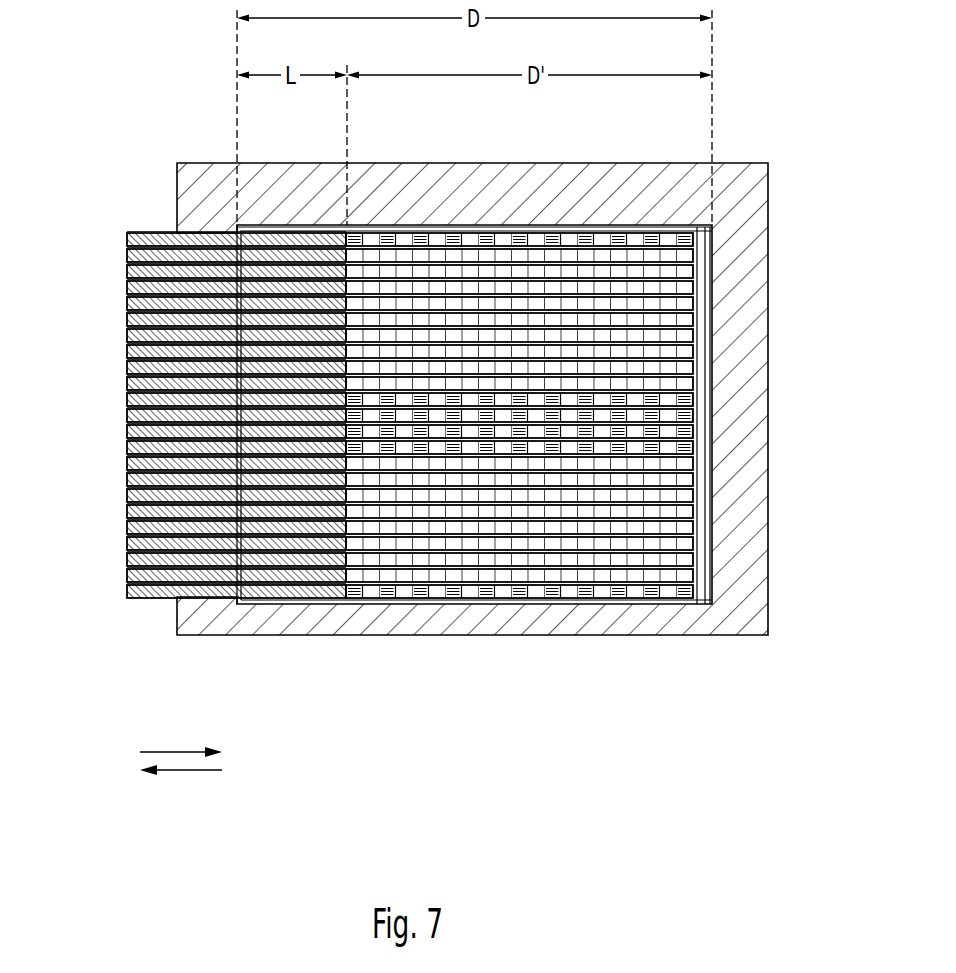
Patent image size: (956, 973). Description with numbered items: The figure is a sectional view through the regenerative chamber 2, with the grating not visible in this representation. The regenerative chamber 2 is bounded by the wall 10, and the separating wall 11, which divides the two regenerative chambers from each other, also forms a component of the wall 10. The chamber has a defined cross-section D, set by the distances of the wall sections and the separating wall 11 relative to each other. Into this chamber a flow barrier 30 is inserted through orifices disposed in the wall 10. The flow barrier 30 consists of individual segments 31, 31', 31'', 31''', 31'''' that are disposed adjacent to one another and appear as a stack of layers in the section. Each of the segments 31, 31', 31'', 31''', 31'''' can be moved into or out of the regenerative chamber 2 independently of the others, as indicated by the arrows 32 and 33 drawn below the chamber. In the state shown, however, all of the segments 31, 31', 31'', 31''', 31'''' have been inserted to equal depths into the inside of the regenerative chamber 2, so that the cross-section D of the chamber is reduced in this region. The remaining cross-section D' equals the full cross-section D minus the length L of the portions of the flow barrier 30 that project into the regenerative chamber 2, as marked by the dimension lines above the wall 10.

The regenerative chamber 2 is at (176, 96).
The wall 10 is at (780, 247).
The separating wall 11 is at (531, 636).
The flow barrier 30 is at (365, 415).
The segment 31 is at (383, 429).
The segment 31' is at (370, 457).
The segment 31'' is at (385, 475).
The segment 31''' is at (369, 411).
The segment 31'''' is at (385, 385).
The arrow 32 is at (176, 750).
The arrow 33 is at (192, 773).